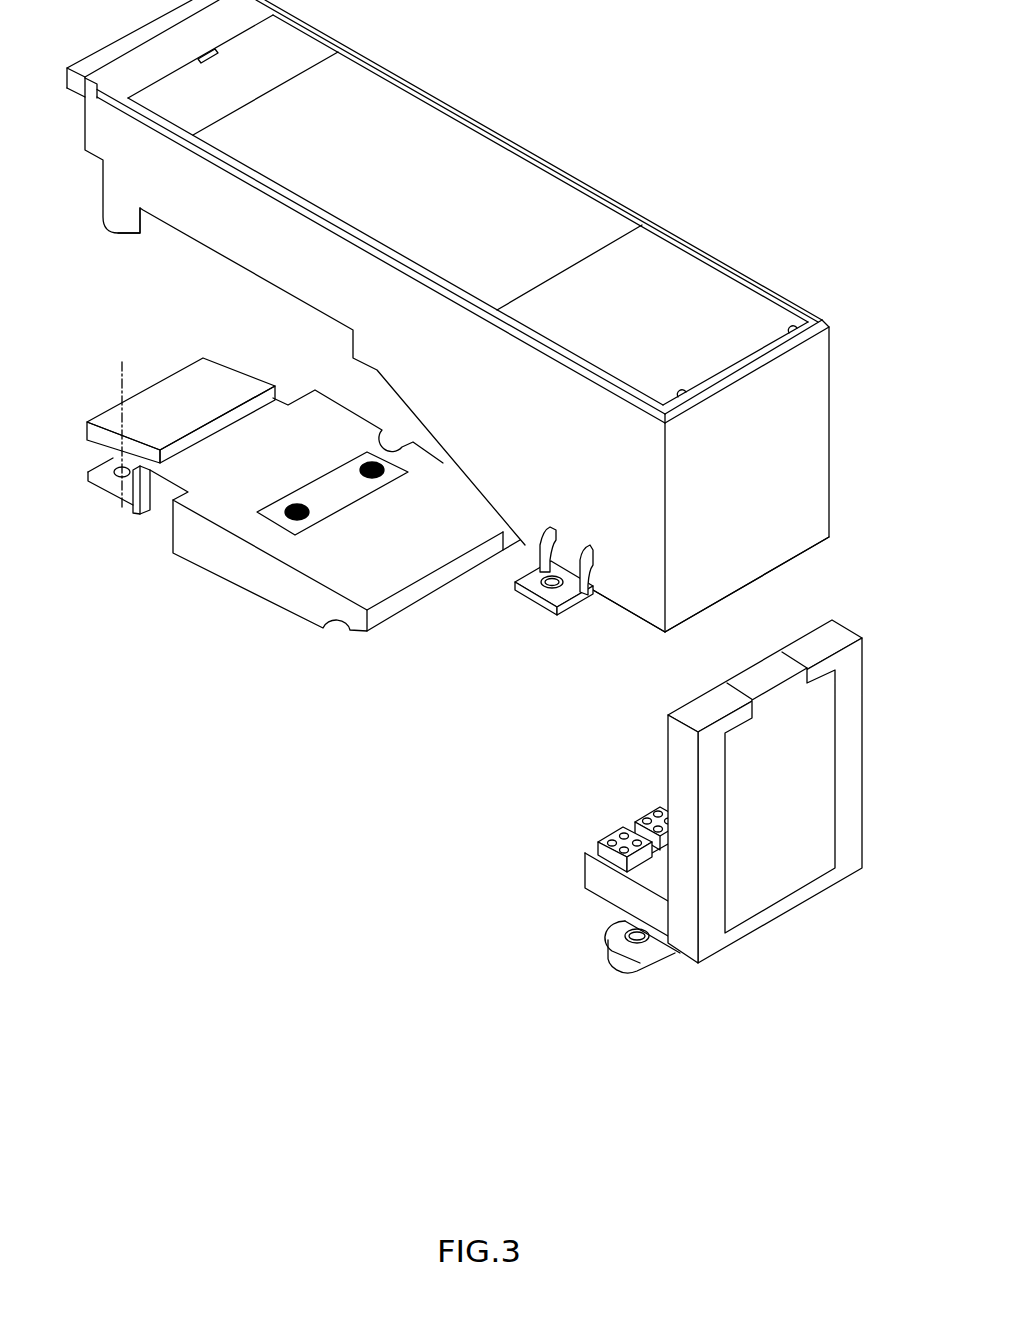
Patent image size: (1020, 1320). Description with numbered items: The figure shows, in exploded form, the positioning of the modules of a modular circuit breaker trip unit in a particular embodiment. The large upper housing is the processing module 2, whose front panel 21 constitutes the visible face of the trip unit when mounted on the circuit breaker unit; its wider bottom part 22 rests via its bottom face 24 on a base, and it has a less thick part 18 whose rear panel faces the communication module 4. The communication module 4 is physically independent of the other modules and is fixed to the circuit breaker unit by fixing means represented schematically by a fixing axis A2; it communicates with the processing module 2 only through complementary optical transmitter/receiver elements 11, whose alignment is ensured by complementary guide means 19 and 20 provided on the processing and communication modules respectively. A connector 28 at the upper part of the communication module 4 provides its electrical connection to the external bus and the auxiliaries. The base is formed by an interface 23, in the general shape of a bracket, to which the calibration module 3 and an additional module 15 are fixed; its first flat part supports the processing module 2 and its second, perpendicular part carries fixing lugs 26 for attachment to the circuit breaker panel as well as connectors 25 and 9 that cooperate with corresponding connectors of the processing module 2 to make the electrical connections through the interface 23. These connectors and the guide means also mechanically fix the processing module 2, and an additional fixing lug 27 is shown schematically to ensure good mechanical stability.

The processing module 2 is at (475, 324).
The calibration module 3 is at (737, 821).
The communication module 4 is at (282, 481).
The connector 9 is at (650, 820).
The optical transmitter/receiver elements 11 is at (372, 452).
The additional module 15 is at (855, 732).
The less thick part 18 is at (317, 285).
The guide means 19 is at (127, 218).
The guide means 20 is at (163, 513).
The front panel 21 is at (408, 108).
The wider bottom part 22 is at (655, 617).
The interface 23 is at (779, 900).
The bottom face 24 is at (805, 487).
The connector 25 is at (613, 830).
The fixing lugs 26 is at (632, 962).
The fixing lug 27 is at (543, 602).
The connector 28 is at (201, 367).
The fixing axis A2 is at (120, 375).